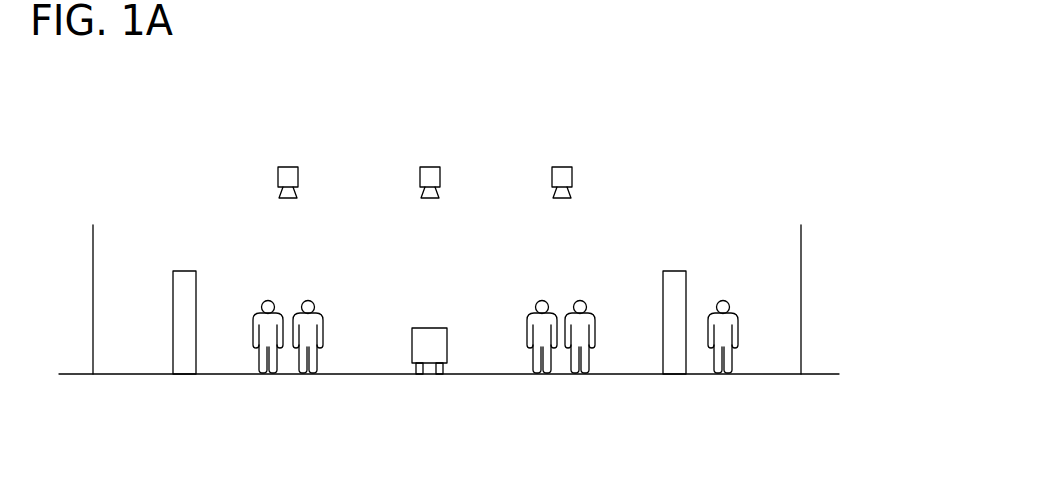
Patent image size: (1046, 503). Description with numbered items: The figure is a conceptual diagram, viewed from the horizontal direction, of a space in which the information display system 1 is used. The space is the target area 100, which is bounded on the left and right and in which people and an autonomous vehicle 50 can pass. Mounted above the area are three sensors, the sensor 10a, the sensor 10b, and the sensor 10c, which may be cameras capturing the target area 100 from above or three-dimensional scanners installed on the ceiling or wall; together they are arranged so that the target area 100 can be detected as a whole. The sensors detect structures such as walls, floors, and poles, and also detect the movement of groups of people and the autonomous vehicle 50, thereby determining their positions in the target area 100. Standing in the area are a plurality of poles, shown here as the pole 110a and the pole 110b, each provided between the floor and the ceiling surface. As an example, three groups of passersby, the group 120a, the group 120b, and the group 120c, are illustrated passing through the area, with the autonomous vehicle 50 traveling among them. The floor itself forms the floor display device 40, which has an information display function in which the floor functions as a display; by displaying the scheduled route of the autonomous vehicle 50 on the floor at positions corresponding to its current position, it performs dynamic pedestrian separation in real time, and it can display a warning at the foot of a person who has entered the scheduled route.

The information display system 1 is at (781, 134).
The target area 100 is at (142, 157).
The sensor 10a is at (290, 165).
The sensor 10b is at (432, 165).
The sensor 10c is at (561, 166).
The pole 110a is at (172, 307).
The pole 110b is at (663, 297).
The group 120a is at (288, 302).
The group 120b is at (562, 302).
The group 120c is at (723, 300).
The autonomous vehicle 50 is at (428, 328).
The floor display device 40 is at (765, 375).